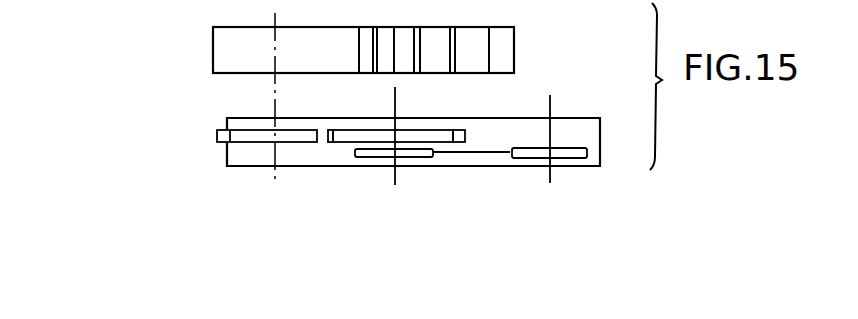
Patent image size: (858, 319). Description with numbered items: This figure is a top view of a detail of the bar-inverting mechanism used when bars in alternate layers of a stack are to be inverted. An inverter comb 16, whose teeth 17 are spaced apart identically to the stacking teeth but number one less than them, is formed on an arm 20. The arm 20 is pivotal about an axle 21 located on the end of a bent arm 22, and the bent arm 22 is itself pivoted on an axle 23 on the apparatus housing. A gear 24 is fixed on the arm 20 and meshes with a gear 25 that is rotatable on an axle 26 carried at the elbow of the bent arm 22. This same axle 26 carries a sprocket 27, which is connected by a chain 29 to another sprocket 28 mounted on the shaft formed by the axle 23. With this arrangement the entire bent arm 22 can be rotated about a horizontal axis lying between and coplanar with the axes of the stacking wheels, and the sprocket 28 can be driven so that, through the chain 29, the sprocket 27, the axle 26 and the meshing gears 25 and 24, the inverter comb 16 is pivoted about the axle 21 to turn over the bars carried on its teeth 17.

The arm 20 is at (232, 50).
The inverter comb 16 is at (477, 27).
The teeth 17 is at (490, 45).
The bent arm 22 is at (272, 91).
The axle 21 is at (272, 177).
The gear 24 is at (250, 135).
The gear 25 is at (431, 133).
The sprocket 27 is at (368, 158).
The chain 29 is at (508, 155).
The sprocket 28 is at (578, 147).
The axle 26 is at (396, 176).
The axle 23 is at (553, 178).